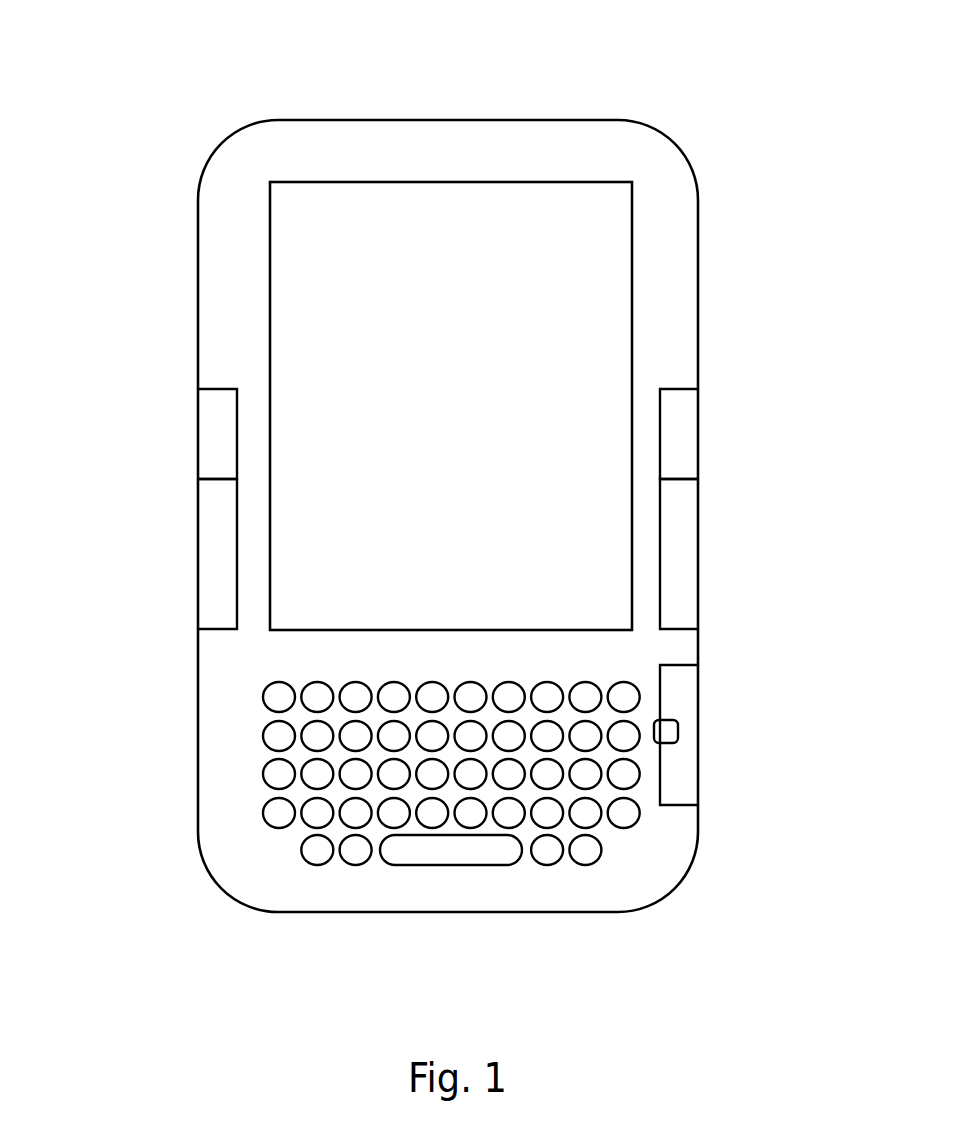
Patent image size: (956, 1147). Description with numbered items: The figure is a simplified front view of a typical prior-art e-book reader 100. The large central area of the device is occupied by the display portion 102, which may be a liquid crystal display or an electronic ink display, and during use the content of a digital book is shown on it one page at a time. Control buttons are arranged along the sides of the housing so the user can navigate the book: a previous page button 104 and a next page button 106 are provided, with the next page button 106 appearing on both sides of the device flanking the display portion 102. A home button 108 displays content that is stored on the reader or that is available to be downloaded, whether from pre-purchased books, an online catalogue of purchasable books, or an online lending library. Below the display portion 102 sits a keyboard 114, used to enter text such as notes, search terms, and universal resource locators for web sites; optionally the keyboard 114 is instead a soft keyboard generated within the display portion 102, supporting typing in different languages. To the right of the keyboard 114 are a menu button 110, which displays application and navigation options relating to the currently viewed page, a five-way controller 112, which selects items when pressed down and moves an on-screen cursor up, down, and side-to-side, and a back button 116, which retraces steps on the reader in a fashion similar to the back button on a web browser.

The e-book reader 100 is at (259, 84).
The display portion 102 is at (580, 313).
The previous page button 104 is at (218, 435).
The next page button 106 is at (218, 556).
The home button 108 is at (688, 443).
The menu button 110 is at (677, 692).
The five-way controller 112 is at (678, 729).
The keyboard 114 is at (252, 863).
The back button 116 is at (687, 783).